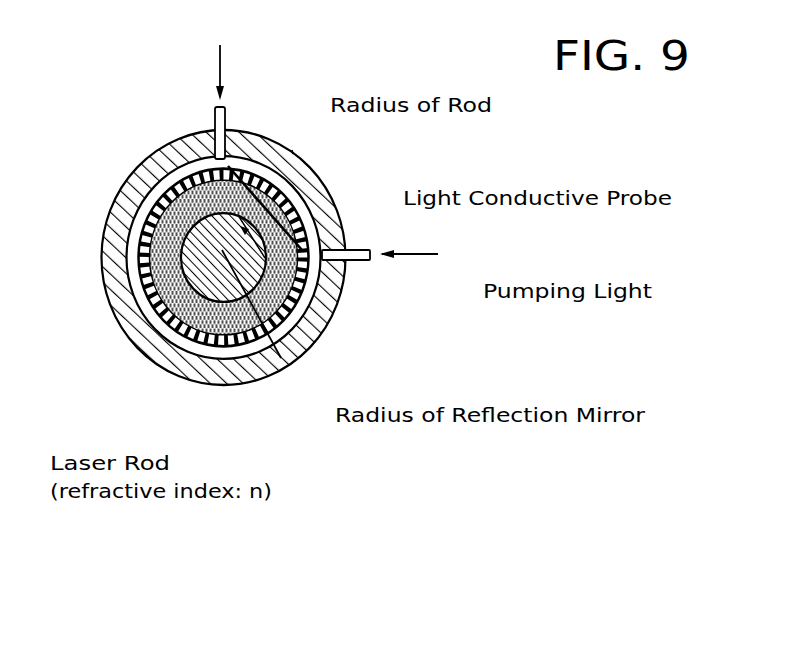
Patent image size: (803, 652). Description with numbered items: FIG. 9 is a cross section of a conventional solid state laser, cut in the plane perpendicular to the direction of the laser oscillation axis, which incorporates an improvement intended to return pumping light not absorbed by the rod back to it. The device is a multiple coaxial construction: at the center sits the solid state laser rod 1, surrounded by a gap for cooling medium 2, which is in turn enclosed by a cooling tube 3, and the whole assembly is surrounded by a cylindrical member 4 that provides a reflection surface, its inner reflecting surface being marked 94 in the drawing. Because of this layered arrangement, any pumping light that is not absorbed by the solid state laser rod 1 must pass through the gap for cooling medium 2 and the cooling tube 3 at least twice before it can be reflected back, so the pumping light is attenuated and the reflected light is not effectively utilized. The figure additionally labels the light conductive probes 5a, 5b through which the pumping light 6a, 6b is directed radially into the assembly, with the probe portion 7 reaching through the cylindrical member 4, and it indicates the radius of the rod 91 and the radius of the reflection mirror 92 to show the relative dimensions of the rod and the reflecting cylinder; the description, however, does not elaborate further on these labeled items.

The solid state laser rod 1 is at (153, 354).
The gap for cooling medium 2 is at (167, 318).
The cooling tube 3 is at (150, 290).
The cylindrical member 4 is at (127, 192).
The light conductive probe 5a is at (357, 250).
The light conductive probe 5b is at (216, 118).
The pumping light 6a is at (436, 254).
The pumping light 6b is at (220, 67).
The light conductive probe tip 7 is at (228, 119).
The radius of rod 91 is at (293, 152).
The radius of reflection mirror 92 is at (281, 358).
The inner surface of reflection mirror 94 is at (128, 258).